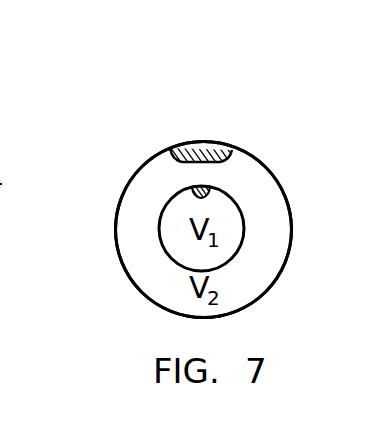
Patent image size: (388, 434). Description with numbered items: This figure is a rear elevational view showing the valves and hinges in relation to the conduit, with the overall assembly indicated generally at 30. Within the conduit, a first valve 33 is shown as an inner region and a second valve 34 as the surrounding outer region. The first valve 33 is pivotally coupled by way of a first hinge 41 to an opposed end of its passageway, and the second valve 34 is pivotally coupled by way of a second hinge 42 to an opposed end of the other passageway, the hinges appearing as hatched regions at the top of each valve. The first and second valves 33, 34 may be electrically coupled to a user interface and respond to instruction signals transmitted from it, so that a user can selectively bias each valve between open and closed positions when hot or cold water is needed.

The cross-sectional view of composite element 30 is at (117, 142).
The first valve 33 is at (227, 228).
The second valve 34 is at (263, 203).
The first hinge 41 is at (202, 150).
The second hinge 42 is at (205, 185).